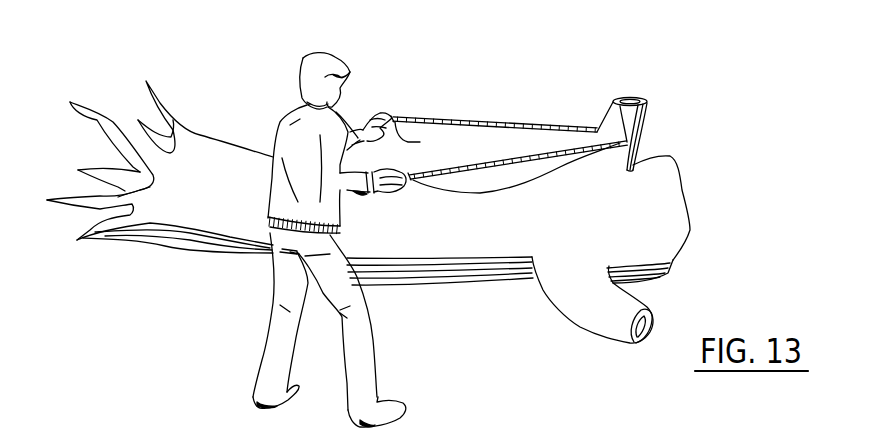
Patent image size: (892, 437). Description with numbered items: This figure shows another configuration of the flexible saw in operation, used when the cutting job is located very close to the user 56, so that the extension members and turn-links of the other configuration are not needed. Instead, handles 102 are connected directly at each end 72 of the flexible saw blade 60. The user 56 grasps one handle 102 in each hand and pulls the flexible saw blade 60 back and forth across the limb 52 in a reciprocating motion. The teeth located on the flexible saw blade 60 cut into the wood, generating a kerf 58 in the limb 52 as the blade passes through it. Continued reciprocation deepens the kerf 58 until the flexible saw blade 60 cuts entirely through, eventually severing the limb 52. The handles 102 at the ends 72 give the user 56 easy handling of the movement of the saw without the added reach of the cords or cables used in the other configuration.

The limb 52 is at (643, 110).
The user 56 is at (283, 113).
The kerf 58 is at (627, 142).
The flexible saw blade 60 is at (502, 121).
The end of the flexible saw blade 72 is at (398, 117).
The handle 102 is at (410, 170).